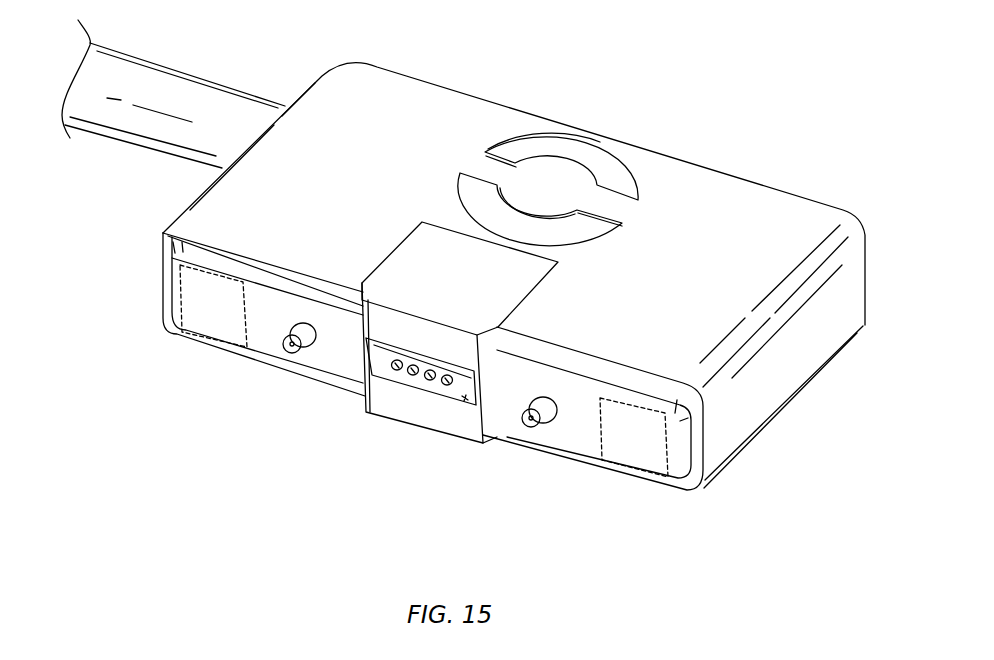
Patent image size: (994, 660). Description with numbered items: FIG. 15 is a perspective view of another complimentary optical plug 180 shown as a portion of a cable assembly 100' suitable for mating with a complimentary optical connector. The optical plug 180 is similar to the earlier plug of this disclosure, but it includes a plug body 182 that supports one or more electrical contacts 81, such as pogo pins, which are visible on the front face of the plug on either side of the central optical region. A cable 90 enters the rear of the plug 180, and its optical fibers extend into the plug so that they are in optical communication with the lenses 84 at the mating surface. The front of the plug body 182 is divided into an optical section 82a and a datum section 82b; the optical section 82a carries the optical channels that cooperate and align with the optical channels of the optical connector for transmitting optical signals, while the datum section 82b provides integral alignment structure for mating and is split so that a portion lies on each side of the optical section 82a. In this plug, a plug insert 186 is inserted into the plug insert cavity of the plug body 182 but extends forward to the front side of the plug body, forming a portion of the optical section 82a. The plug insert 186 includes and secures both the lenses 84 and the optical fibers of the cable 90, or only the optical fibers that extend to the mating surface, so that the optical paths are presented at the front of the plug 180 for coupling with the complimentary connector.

The cable assembly 100' is at (514, 197).
The optical plug 180 is at (706, 188).
The cable 90 is at (117, 120).
The plug body 182 is at (263, 340).
The electrical contacts 81 is at (290, 345).
The datum section 82b is at (322, 367).
The optical section 82a is at (455, 407).
The plug insert 186 is at (465, 400).
The lenses 84 is at (397, 370).